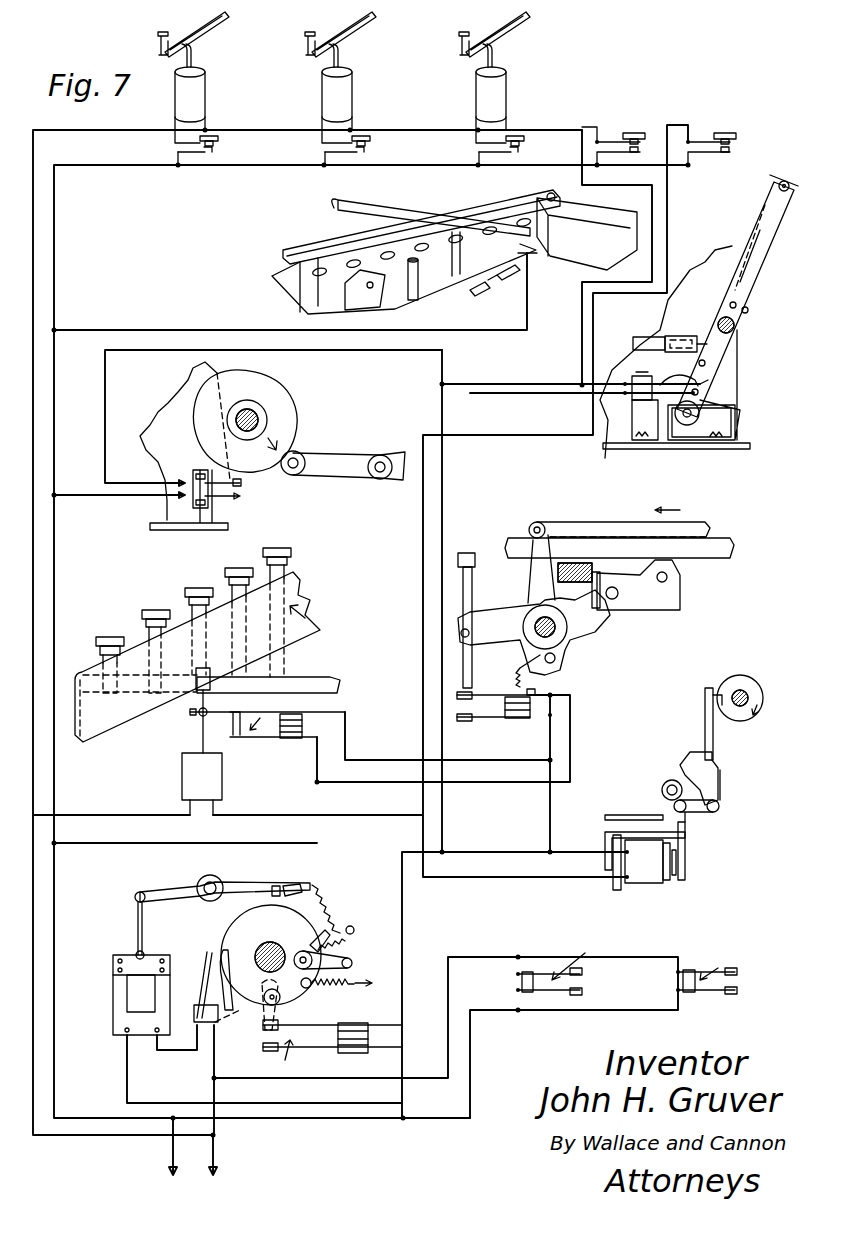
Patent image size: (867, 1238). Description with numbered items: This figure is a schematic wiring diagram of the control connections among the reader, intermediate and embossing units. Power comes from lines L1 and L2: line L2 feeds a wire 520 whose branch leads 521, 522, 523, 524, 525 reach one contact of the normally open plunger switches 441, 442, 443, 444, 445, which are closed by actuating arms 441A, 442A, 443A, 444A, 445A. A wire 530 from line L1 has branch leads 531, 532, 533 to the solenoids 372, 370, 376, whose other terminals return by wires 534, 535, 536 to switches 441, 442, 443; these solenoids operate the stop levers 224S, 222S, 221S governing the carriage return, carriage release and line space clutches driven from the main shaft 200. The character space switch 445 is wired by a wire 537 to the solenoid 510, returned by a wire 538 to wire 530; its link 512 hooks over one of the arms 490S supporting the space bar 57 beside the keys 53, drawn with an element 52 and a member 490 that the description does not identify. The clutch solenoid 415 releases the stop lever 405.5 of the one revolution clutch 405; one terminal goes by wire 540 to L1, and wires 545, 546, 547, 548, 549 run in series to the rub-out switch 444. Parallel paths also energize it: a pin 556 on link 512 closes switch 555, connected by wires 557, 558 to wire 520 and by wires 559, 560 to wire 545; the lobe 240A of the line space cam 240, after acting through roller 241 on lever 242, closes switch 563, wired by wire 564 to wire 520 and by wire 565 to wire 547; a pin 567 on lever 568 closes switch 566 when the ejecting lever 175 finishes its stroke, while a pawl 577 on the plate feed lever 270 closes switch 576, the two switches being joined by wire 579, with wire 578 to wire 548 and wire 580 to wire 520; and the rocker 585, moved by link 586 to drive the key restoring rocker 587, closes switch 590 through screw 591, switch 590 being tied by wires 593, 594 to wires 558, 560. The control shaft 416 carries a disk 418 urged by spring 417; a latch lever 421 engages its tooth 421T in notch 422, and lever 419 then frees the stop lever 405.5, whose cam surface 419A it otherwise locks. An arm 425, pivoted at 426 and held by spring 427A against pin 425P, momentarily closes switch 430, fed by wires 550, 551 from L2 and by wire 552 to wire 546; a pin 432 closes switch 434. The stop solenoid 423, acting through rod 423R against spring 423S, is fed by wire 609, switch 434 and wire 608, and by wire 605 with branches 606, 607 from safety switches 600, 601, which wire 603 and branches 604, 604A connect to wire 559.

The wire 530 is at (106, 137).
The wire 520 is at (93, 168).
The wire 549 is at (582, 330).
The wire 537 is at (668, 224).
The wire 580 is at (224, 330).
The switch 566 is at (503, 283).
The wire 548 is at (518, 385).
The wire 579 is at (528, 380).
The stop lever 224S is at (211, 32).
The solenoid 372 is at (198, 91).
The branch lead 531 is at (206, 124).
The wire 534 is at (174, 140).
The actuating arm 441A is at (219, 141).
The control switch 441 is at (196, 155).
The branch lead 521 is at (175, 163).
The stop lever 222S is at (372, 24).
The solenoid 370 is at (350, 87).
The branch lead 532 is at (355, 125).
The wire 535 is at (320, 130).
The actuating arm 442A is at (372, 140).
The control switch 442 is at (345, 155).
The branch lead 522 is at (322, 163).
The stop lever 221S is at (530, 26).
The solenoid 376 is at (505, 82).
The branch lead 533 is at (508, 124).
The wire 536 is at (476, 130).
The actuating arm 443A is at (518, 136).
The control switch 443 is at (502, 158).
The branch lead 523 is at (477, 163).
The rub-out switch 444 is at (597, 138).
The actuating arm 444A is at (638, 132).
The branch lead 524 is at (600, 165).
The character space switch 445 is at (690, 138).
The actuating arm 445A is at (733, 132).
The branch lead 525 is at (692, 165).
The ejecting lever 175 is at (495, 200).
The switch operating lever 568 is at (438, 272).
The pin 567 is at (480, 292).
The plate feed lever 270 is at (750, 280).
The one-way pawl 577 is at (725, 360).
The wire 578 is at (600, 375).
The switch 576 is at (705, 384).
The wire 565 is at (300, 350).
The wire 547 is at (445, 484).
The wire 564 is at (76, 497).
The cam lobe 240A is at (190, 373).
The line space cam 240 is at (275, 404).
The main shaft 200 is at (235, 422).
The transmitting lever 242 is at (325, 457).
The roller 241 is at (292, 476).
The switch 563 is at (244, 490).
The plate 52 is at (303, 607).
The space bar 57 is at (105, 632).
The key 53 is at (155, 608).
The space bar arm 490S is at (300, 680).
The link 512 is at (190, 708).
The pin 556 is at (208, 712).
The wire 559 is at (460, 760).
The switch 555 is at (252, 735).
The wire 557 is at (320, 782).
The wire 593 is at (455, 785).
The character spacing solenoid 510 is at (210, 797).
The wire 538 is at (88, 815).
The wire 558 is at (205, 843).
The link 586 is at (600, 528).
The bar 490 is at (728, 552).
The screw 591 is at (468, 604).
The rocker 585 is at (580, 640).
The key restoring rocker 587 is at (682, 608).
The switch 590 is at (484, 751).
The wire 594 is at (556, 740).
The wire 560 is at (552, 806).
The wire 546 is at (480, 852).
The wire 545 is at (580, 852).
The wire 552 is at (402, 870).
The wire 540 is at (492, 880).
The one-revolution clutch 405 is at (742, 685).
The stop lever 405.5 is at (715, 720).
The cam surface 419A is at (690, 760).
The control shaft 416 is at (664, 786).
The lever 419 is at (674, 808).
The clutch solenoid 415 is at (652, 882).
The latch lever 421 is at (240, 892).
The tooth 421T is at (280, 885).
The disk 418 is at (290, 900).
The rod 423R is at (137, 930).
The stop solenoid 423 is at (135, 1000).
The spring 423S is at (340, 908).
The pin 425P is at (353, 928).
The arm 425 is at (350, 962).
The spring 427A is at (347, 940).
The pivot 426 is at (312, 950).
The pin 432 is at (282, 1000).
The spring 417 is at (340, 985).
The notch 422 is at (225, 937).
The switch 434 is at (202, 970).
The wire 609 is at (216, 1058).
The wire 608 is at (170, 1052).
The wire 551 is at (400, 1102).
The control switch 430 is at (290, 1062).
The power line L1 is at (224, 1155).
The power line L2 is at (160, 1146).
The wire 550 is at (288, 1120).
The wire 605 is at (458, 957).
The branch wire 607 is at (522, 958).
The safety switch 601 is at (584, 960).
The branch wire 604 is at (682, 1011).
The branch wire 604A is at (522, 1012).
The wire 603 is at (472, 1043).
The branch wire 606 is at (682, 960).
The safety switch 600 is at (725, 973).